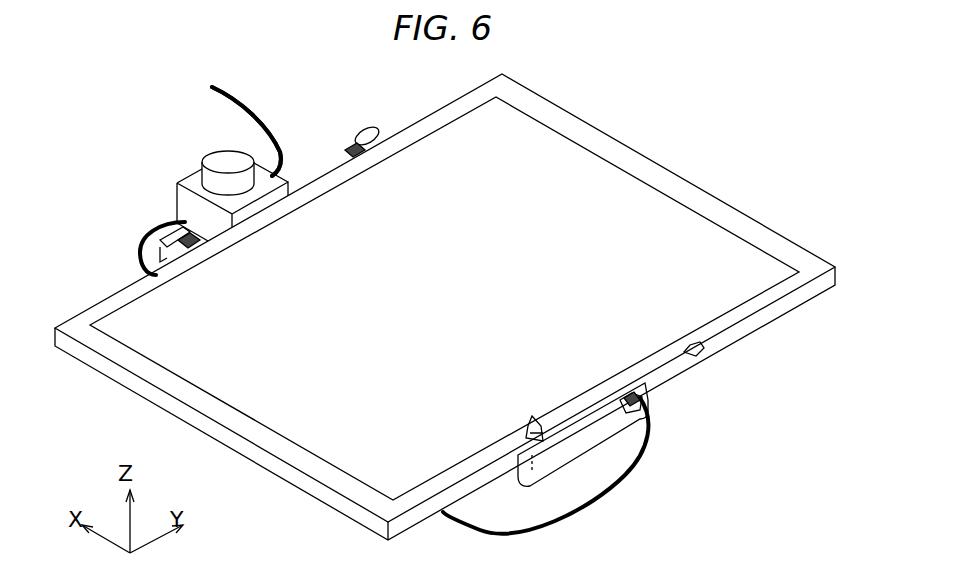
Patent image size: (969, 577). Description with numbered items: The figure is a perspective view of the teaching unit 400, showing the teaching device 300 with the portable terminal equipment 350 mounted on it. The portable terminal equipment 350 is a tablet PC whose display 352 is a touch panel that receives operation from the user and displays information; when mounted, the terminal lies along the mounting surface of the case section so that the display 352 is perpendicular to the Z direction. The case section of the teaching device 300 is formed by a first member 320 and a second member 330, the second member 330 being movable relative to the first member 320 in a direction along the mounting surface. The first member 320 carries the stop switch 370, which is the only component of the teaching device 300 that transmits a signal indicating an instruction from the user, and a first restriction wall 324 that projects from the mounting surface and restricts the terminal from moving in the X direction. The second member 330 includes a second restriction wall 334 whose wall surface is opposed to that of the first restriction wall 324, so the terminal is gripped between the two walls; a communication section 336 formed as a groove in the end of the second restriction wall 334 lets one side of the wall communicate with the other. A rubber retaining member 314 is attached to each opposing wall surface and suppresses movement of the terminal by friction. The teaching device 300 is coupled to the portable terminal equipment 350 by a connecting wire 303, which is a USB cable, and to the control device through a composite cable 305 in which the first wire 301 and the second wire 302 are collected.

The teaching device 300 is at (780, 508).
The teaching unit 400 is at (783, 142).
The portable terminal equipment 350 is at (686, 185).
The display 352 is at (548, 178).
The first member 320 is at (193, 187).
The stop switch 370 is at (219, 152).
The composite cable 305 is at (336, 66).
The first wire 301 is at (298, 117).
The second wire 302 is at (298, 131).
The connecting wire 303 is at (160, 226).
The first restriction wall 324 is at (158, 240).
The retaining member 314 is at (165, 255).
The second member 330 is at (680, 449).
The second restriction wall 334 is at (568, 453).
The communication section 336 is at (646, 403).